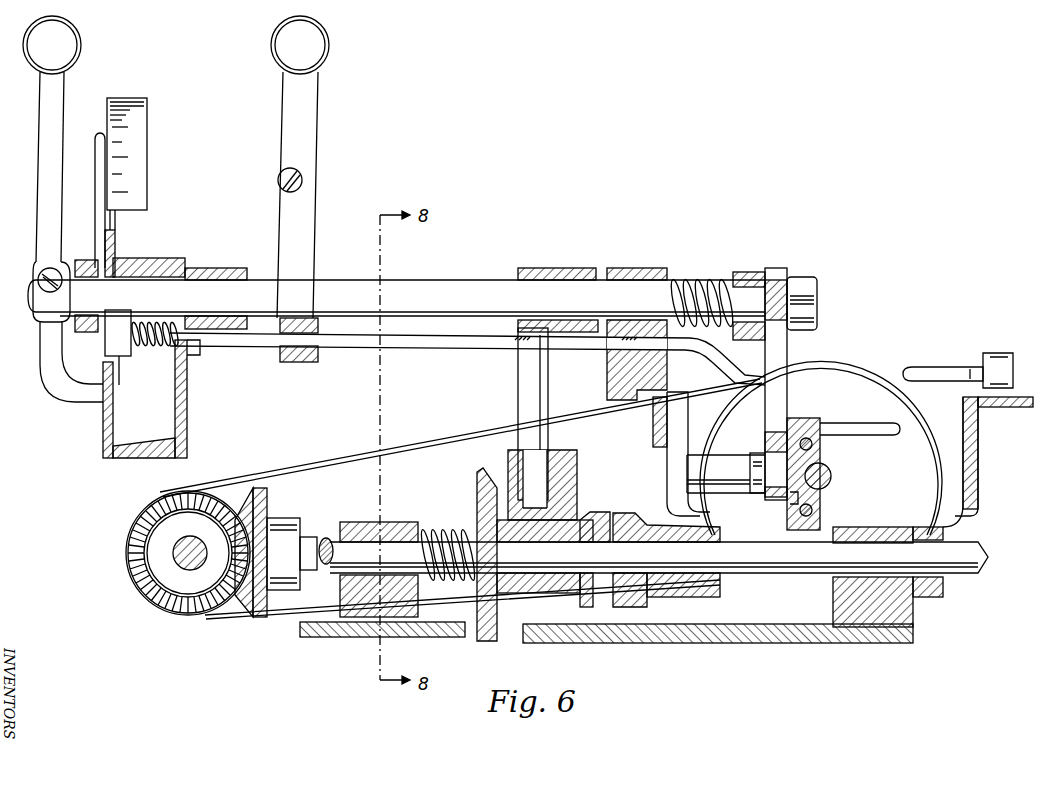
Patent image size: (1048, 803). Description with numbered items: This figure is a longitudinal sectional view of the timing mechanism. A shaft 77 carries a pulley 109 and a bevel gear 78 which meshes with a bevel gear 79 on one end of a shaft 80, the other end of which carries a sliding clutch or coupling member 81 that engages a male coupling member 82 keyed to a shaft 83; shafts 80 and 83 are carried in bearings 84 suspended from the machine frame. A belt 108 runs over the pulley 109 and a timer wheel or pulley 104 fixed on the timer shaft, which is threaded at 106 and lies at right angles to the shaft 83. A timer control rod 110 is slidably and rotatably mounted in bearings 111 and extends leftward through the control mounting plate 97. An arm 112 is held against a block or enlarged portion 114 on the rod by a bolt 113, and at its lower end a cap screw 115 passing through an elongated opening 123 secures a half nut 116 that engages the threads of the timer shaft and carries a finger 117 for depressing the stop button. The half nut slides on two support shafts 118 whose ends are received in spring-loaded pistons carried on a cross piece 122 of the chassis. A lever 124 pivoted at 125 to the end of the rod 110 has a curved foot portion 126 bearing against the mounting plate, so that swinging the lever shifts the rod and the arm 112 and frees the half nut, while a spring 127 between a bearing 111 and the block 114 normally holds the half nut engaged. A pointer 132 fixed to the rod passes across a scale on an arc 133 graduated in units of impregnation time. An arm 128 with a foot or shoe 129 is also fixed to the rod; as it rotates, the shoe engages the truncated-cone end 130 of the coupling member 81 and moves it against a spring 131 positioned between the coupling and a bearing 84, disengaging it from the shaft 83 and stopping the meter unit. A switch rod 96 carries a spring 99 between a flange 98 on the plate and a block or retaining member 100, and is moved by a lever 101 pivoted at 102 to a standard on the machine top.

The shaft 77 is at (178, 568).
The bevel gear 78 is at (218, 608).
The bevel gear 79 is at (265, 505).
The shaft 80 is at (328, 538).
The sliding clutch or coupling member 81 is at (592, 516).
The male coupling member 82 is at (660, 525).
The shaft 83 is at (968, 574).
The bearings 84 is at (391, 525).
The switch rod 96 is at (438, 347).
The control mounting plate 97 is at (103, 447).
The flange 98 is at (187, 401).
The spring 99 is at (165, 348).
The block or retaining member 100 is at (119, 362).
The lever 101 is at (322, 47).
The pivot 102 is at (302, 182).
The timer wheel or pulley 104 is at (851, 386).
The threads 106 is at (783, 498).
The belt 108 is at (270, 478).
The pulley 109 is at (138, 514).
The timer control rod 110 is at (462, 290).
The bearings 111 is at (206, 267).
The timer arm 112 is at (780, 352).
The bolt 113 is at (797, 280).
The block or enlarged portion 114 is at (745, 271).
The cap screw 115 is at (763, 484).
The half nut 116 is at (794, 424).
The finger 117 is at (896, 426).
The support shafts 118 is at (814, 488).
The cross piece 122 is at (665, 429).
The opening 123 is at (773, 456).
The lever 124 is at (68, 45).
The pivot 125 is at (40, 284).
The curved foot portion 126 is at (65, 385).
The spring 127 is at (680, 284).
The arm 128 is at (518, 393).
The foot or shoe 129 is at (569, 496).
The enlarged end 130 is at (490, 470).
The spring 131 is at (435, 527).
The pointer 132 is at (97, 132).
The arc 133 is at (140, 146).